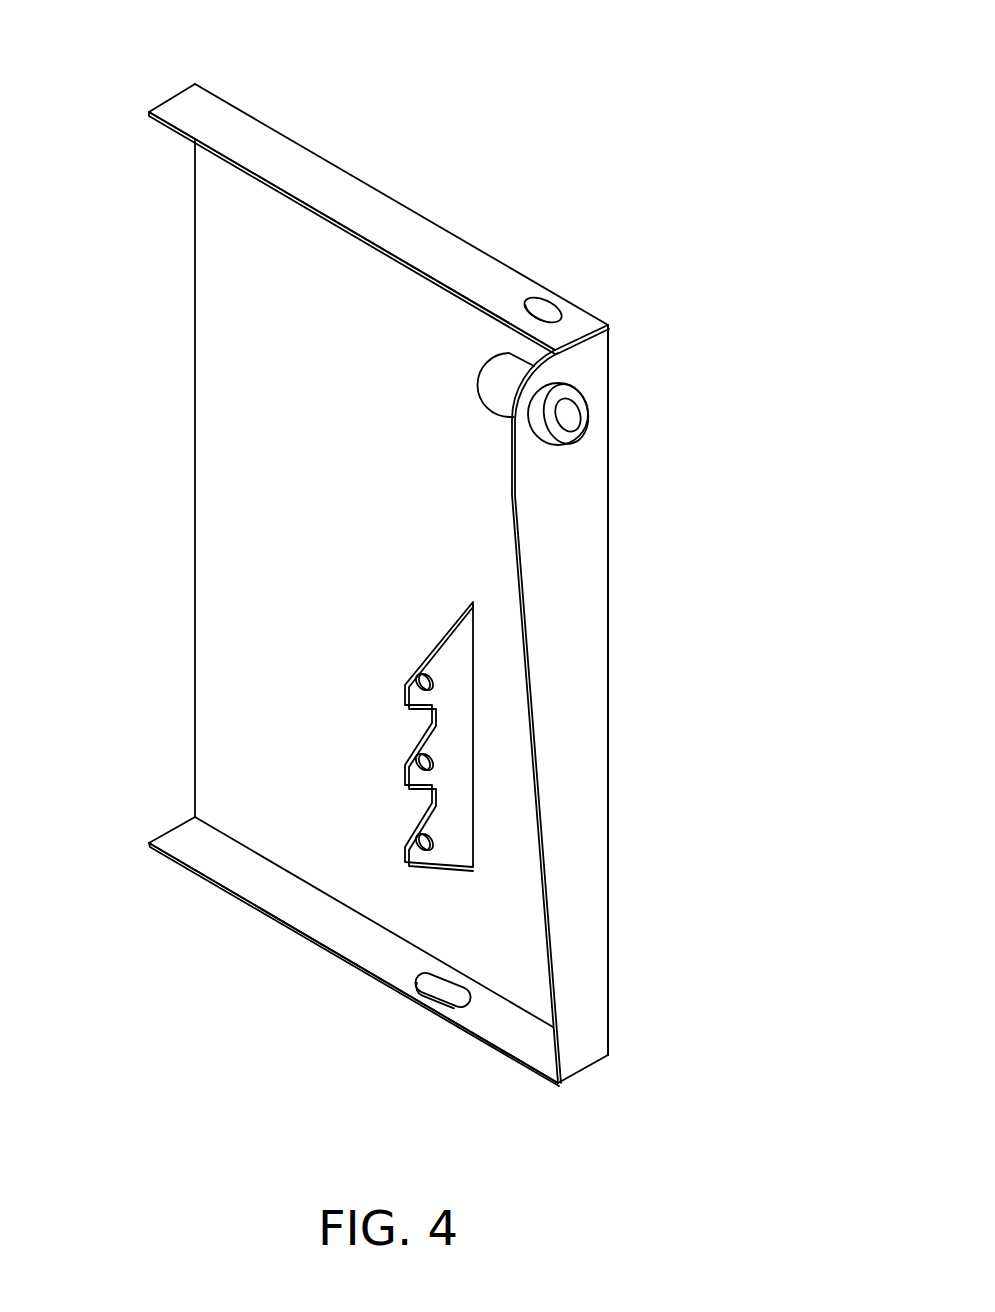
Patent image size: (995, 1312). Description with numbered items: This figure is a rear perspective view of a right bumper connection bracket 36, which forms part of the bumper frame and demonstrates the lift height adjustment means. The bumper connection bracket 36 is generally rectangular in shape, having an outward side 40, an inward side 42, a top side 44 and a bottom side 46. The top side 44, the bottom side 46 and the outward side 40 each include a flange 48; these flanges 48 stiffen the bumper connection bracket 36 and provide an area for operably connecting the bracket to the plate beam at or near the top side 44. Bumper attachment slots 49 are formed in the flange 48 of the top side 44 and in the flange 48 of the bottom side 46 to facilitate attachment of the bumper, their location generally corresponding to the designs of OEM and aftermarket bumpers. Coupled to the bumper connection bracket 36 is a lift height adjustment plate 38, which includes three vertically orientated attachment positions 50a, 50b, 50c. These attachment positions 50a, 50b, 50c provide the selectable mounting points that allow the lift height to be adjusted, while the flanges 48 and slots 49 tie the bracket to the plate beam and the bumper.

The bumper connection bracket 36 is at (407, 582).
The lift height adjustment plate 38 is at (466, 810).
The outward side 40 is at (614, 716).
The inward side 42 is at (335, 569).
The top side 44 is at (379, 219).
The bottom side 46 is at (378, 988).
The flange 48 is at (287, 160).
The bumper attachment slot 49 is at (542, 314).
The attachment position 50a is at (410, 685).
The attachment position 50b is at (410, 765).
The attachment position 50c is at (410, 845).